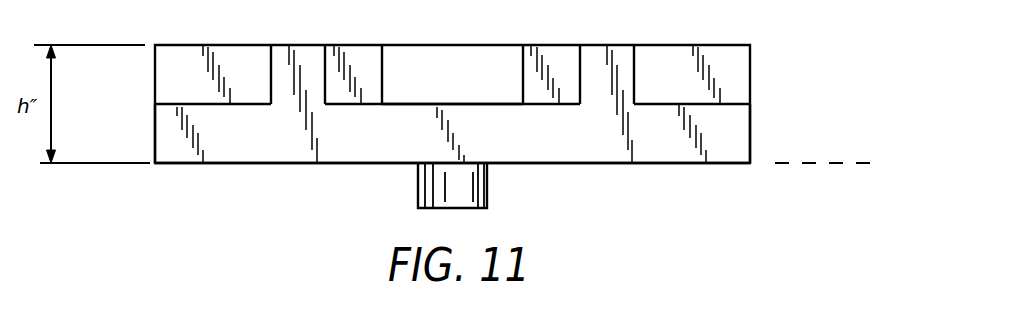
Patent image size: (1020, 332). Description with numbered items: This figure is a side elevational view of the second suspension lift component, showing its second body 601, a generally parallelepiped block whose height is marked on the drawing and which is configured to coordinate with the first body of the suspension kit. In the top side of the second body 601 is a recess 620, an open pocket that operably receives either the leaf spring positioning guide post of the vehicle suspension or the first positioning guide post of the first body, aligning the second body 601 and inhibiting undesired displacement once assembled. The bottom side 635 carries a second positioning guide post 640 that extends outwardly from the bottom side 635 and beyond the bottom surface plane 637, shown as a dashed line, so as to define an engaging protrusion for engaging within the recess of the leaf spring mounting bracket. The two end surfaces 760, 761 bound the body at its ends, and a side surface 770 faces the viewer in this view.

The second body 601 is at (237, 144).
The recess 620 is at (471, 62).
The bottom side 635 is at (618, 163).
The bottom surface plane 637 is at (862, 164).
The second positioning guide post 640 is at (458, 185).
The end surface 760 is at (750, 110).
The end surface 761 is at (156, 104).
The side surface 770 is at (378, 140).